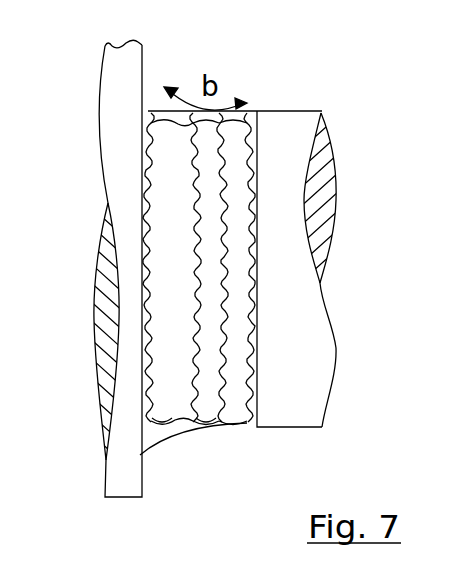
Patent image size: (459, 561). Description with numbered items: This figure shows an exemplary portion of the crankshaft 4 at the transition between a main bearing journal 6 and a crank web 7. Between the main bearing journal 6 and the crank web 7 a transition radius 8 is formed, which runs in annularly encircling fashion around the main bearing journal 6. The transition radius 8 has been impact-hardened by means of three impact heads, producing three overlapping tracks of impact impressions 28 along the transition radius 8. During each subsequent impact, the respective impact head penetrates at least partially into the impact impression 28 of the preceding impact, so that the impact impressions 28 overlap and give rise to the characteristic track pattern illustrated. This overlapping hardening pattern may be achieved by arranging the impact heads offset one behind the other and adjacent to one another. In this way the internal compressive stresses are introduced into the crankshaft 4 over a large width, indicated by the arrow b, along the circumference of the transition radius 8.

The crankshaft 4 is at (354, 152).
The main bearing journal 6 is at (283, 125).
The crank web 7 is at (110, 103).
The transition radius 8 is at (155, 99).
The impact impression 28 is at (203, 447).